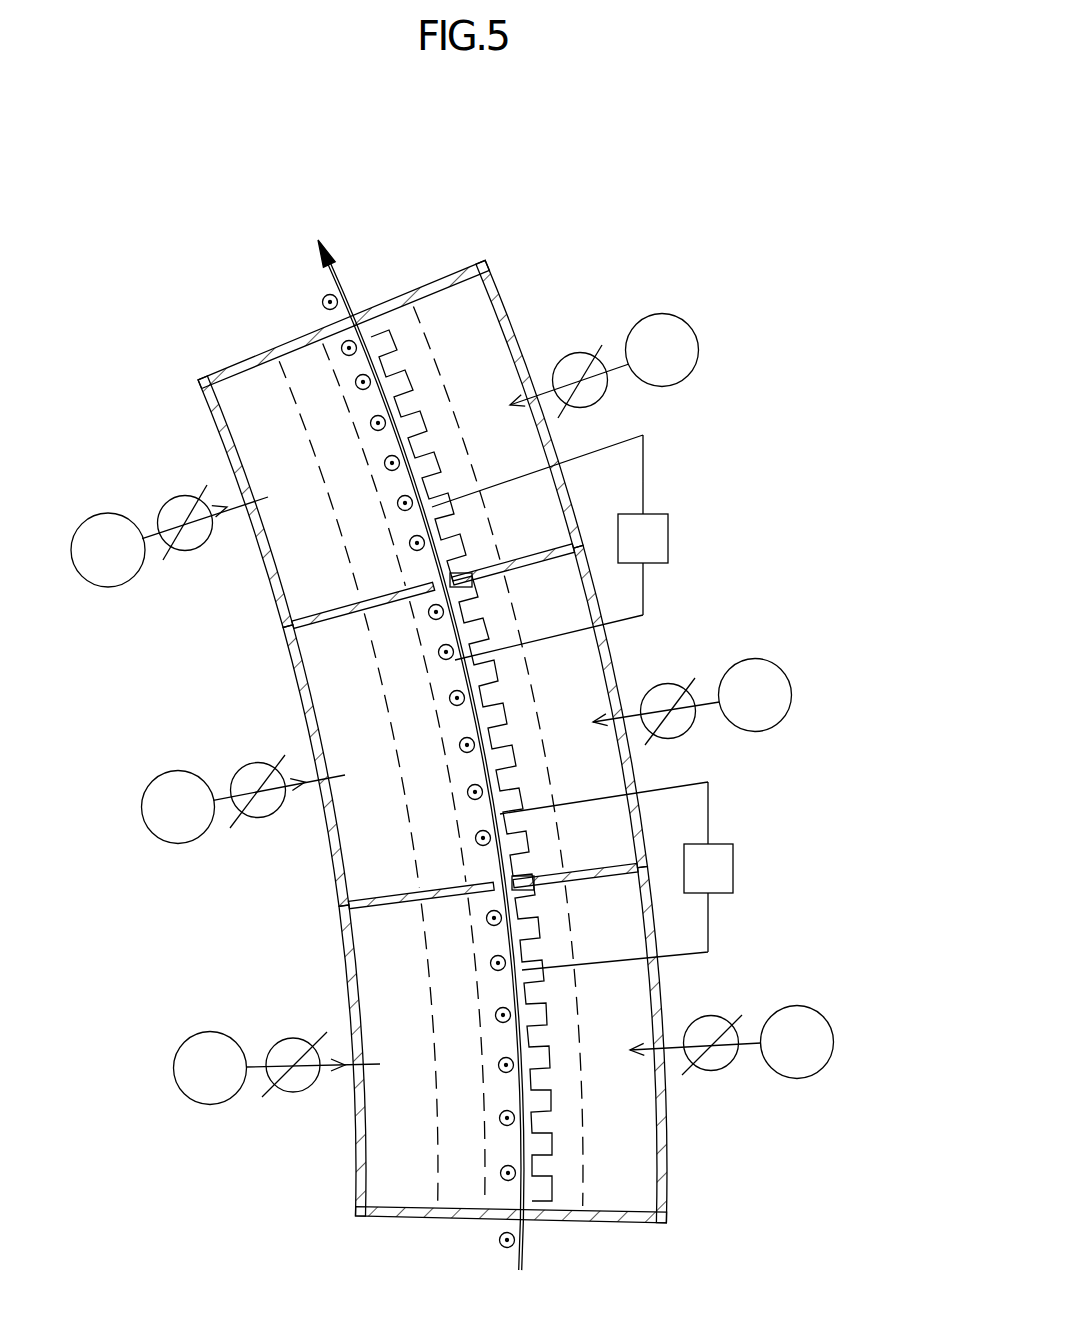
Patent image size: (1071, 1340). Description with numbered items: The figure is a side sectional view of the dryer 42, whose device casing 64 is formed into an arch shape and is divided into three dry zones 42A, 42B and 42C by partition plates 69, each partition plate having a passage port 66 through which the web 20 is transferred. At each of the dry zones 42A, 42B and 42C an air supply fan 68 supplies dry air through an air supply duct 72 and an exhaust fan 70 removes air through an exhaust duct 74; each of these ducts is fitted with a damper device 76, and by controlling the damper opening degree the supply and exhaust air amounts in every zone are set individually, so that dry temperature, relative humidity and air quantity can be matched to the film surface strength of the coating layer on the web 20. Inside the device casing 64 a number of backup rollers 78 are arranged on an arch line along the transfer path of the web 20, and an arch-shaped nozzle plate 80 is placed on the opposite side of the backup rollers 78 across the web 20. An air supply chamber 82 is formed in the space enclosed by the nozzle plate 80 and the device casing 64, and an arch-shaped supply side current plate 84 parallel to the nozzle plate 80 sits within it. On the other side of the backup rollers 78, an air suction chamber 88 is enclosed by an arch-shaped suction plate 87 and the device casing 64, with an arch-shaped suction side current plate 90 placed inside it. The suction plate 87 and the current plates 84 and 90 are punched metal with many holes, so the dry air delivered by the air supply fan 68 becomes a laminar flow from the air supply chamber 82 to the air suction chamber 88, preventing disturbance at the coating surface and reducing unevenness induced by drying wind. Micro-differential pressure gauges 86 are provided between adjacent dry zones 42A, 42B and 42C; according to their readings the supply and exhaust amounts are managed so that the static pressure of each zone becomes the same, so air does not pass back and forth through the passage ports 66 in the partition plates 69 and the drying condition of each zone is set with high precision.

The web 20 is at (524, 1252).
The dryer 42 is at (722, 438).
The dry zone 42A is at (662, 1010).
The dry zone 42B is at (615, 667).
The dry zone 42C is at (560, 447).
The device casing 64 is at (504, 312).
The passage port 66 is at (433, 578).
The air supply fan 68 is at (660, 317).
The partition plate 69 is at (337, 622).
The exhaust fan 70 is at (112, 588).
The air supply duct 72 is at (616, 360).
The exhaust duct 74 is at (231, 510).
The damper device 76 is at (185, 495).
The backup roller 78 is at (375, 428).
The nozzle plate 80 is at (392, 338).
The air supply chamber 82 is at (462, 338).
The supply side current plate 84 is at (584, 1131).
The micro-differential pressure gauge 86 is at (660, 542).
The suction plate 87 is at (485, 1160).
The air suction chamber 88 is at (248, 390).
The suction side current plate 90 is at (368, 643).